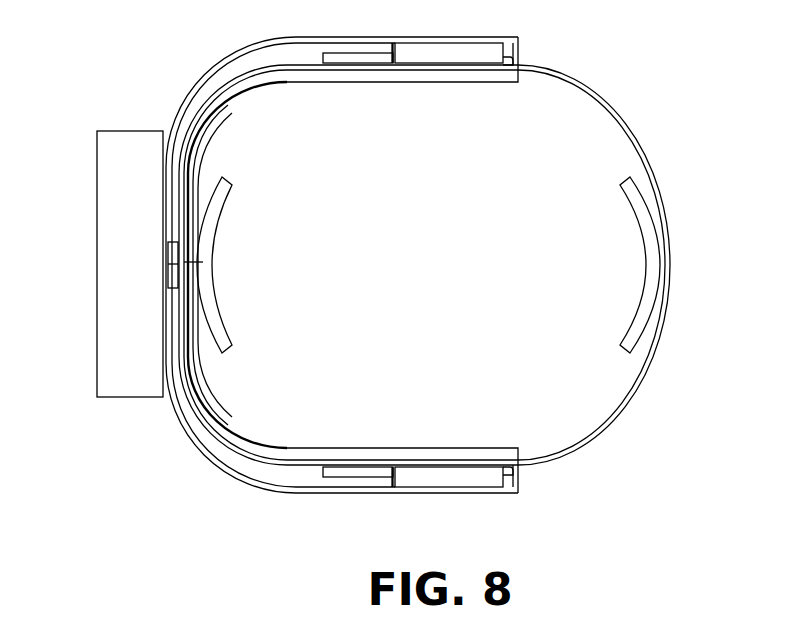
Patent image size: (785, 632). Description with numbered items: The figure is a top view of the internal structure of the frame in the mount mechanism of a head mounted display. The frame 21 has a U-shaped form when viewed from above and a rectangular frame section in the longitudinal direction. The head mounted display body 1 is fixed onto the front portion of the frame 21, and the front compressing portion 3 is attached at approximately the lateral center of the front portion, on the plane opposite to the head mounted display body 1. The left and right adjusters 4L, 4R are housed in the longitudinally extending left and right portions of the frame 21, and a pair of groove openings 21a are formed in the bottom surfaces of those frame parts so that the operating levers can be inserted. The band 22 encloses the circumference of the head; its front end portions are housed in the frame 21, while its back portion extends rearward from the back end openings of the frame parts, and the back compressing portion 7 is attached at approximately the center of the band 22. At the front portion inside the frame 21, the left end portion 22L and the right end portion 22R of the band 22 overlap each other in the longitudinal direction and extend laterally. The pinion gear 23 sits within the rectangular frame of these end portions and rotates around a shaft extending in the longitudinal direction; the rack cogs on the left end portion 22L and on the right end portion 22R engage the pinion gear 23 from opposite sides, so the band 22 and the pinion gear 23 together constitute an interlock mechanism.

The head mounted display body 1 is at (127, 196).
The front compressing portion 3 is at (203, 263).
The right adjuster 4R is at (443, 54).
The left adjuster 4L is at (455, 480).
The back compressing portion 7 is at (660, 248).
The frame 21 is at (203, 82).
The groove opening 21a is at (345, 62).
The band 22 is at (570, 458).
The right end portion 22R is at (180, 200).
The left end portion 22L is at (195, 373).
The pinion gear 23 is at (170, 275).